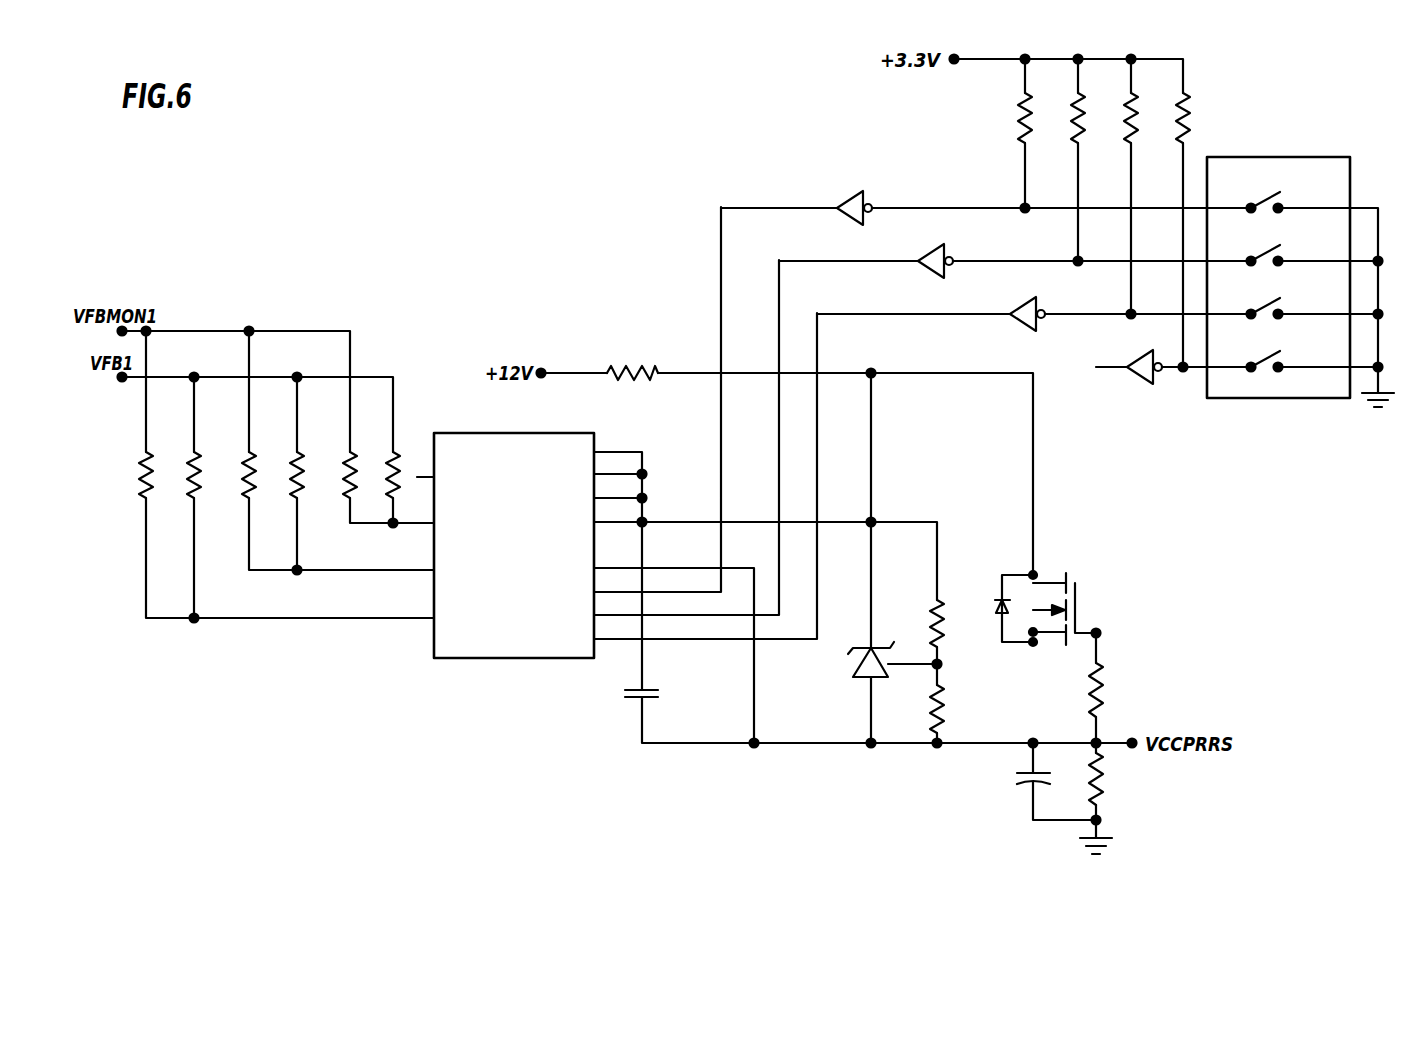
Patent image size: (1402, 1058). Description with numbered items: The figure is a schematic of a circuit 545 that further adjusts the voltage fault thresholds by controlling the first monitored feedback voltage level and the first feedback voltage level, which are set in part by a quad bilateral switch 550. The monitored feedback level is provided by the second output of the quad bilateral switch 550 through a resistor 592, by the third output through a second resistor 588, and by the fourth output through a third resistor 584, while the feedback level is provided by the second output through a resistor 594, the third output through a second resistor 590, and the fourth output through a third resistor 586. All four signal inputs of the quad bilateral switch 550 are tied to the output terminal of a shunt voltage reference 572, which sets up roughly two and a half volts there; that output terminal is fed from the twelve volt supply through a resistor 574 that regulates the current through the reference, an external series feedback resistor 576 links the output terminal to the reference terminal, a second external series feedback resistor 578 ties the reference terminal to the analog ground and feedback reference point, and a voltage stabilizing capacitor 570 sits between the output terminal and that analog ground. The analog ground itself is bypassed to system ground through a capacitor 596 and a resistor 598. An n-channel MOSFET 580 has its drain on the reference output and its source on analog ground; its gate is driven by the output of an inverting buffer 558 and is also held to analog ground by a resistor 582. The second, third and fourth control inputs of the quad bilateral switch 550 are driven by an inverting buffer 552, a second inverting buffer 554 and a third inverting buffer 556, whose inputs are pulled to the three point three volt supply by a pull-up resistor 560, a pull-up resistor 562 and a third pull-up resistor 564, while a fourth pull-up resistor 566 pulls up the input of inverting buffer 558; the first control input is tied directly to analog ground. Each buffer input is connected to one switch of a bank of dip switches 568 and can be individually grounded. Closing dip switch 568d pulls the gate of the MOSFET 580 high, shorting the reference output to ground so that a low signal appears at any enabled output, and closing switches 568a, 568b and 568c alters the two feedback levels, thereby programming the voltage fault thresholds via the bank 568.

The circuit 545 is at (498, 722).
The quad bilateral switch 550 is at (487, 658).
The inverting buffer 552 is at (852, 197).
The second inverting buffer 554 is at (946, 271).
The third inverting buffer 556 is at (1038, 323).
The inverting buffer 558 is at (1142, 380).
The pull-up resistor 560 is at (1022, 115).
The pull-up resistor 562 is at (1083, 92).
The third pull-up resistor 564 is at (1137, 105).
The fourth pull-up resistor 566 is at (1188, 110).
The bank of dip switches 568 is at (1280, 157).
The switch 568a is at (1283, 200).
The switch 568b is at (1283, 253).
The switch 568c is at (1283, 306).
The dip switch 568d is at (1283, 359).
The voltage stabilizing capacitor 570 is at (661, 693).
The shunt voltage reference 572 is at (853, 672).
The resistor 574 is at (645, 368).
The external series feedback resistor 576 is at (940, 597).
The second external series feedback resistor 578 is at (942, 700).
The n-channel MOSFET 580 is at (1048, 582).
The resistor 582 is at (1100, 682).
The third resistor 584 is at (146, 497).
The third resistor 586 is at (194, 500).
The second resistor 588 is at (247, 500).
The second resistor 590 is at (298, 500).
The resistor 592 is at (351, 497).
The resistor 594 is at (394, 457).
The capacitor 596 is at (1027, 780).
The resistor 598 is at (1102, 768).